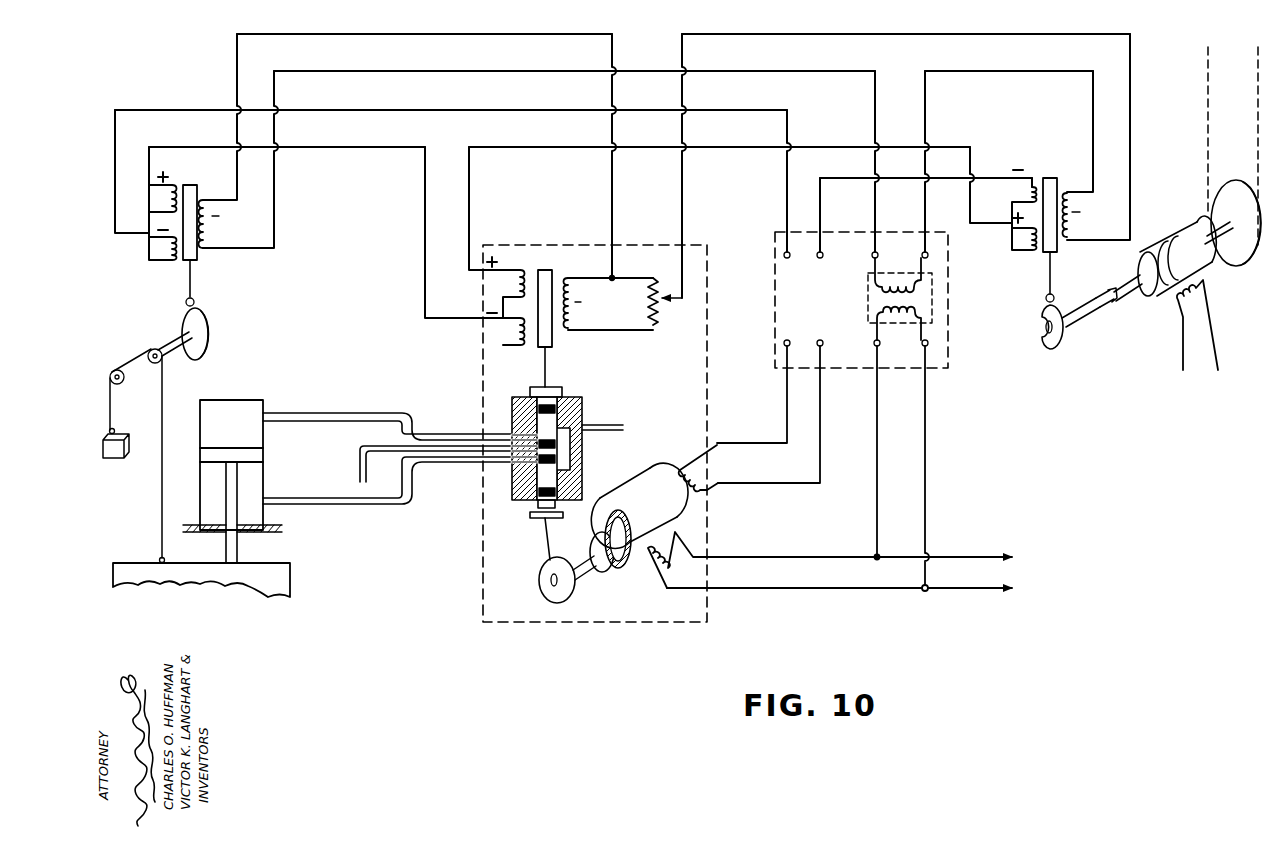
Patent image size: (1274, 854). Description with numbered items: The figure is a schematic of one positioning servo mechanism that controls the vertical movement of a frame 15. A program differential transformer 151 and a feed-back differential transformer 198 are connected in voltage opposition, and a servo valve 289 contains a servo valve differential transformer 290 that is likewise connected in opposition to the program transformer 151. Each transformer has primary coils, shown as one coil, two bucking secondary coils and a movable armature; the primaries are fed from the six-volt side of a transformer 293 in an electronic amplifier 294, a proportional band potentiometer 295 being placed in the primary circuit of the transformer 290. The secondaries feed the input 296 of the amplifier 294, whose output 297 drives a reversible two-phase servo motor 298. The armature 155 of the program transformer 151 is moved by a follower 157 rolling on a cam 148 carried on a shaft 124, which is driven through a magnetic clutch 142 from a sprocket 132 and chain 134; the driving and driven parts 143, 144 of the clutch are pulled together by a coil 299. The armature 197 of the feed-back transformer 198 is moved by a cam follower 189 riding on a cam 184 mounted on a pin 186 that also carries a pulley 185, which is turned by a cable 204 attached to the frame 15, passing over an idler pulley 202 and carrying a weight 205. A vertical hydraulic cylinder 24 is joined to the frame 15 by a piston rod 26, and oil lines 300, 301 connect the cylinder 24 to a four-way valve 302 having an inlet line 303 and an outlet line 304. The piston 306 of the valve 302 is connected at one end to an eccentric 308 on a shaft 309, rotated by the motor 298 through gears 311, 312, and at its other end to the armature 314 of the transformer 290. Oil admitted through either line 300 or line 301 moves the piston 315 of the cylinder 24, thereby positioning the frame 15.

The frame 15 is at (285, 574).
The vertical hydraulic cylinder 24 is at (258, 479).
The piston rod 26 is at (238, 546).
The shaft 124 is at (1098, 304).
The sprocket 132 is at (1226, 190).
The chain 134 is at (1207, 137).
The magnetic clutch 142 is at (1172, 236).
The driving part of magnetic clutch 143 is at (1205, 258).
The driven part of magnetic clutch 144 is at (1150, 300).
The cam 148 is at (1064, 340).
The program differential transformer 151 is at (1063, 252).
The armature 155 is at (1050, 178).
The follower 157 is at (1046, 296).
The cam 184 is at (210, 335).
The pulley 185 is at (152, 349).
The pin 186 is at (172, 367).
The cam follower 189 is at (195, 303).
The armature 197 is at (190, 184).
The feed-back differential transformer 198 is at (208, 258).
The idler pulley 202 is at (124, 374).
The cable 204 is at (163, 430).
The weight 205 is at (112, 460).
The servo valve 289 is at (710, 608).
The servo valve differential transformer 290 is at (570, 342).
The transformer 293 is at (866, 301).
The electronic amplifier 294 is at (942, 370).
The proportional band potentiometer 295 is at (656, 276).
The input 296 is at (824, 256).
The output 297 is at (823, 342).
The reversible two-phase servo motor 298 is at (630, 478).
The coil 299 is at (1178, 325).
The oil line 300 is at (340, 416).
The oil line 301 is at (326, 504).
The four-way valve 302 is at (510, 408).
The inlet line 303 is at (358, 463).
The outlet line 304 is at (604, 422).
The piston 306 is at (560, 486).
The eccentric 308 is at (541, 590).
The shaft 309 is at (587, 573).
The gear 311 is at (600, 535).
The gear 312 is at (630, 572).
The armature 314 is at (552, 278).
The piston 315 is at (258, 452).